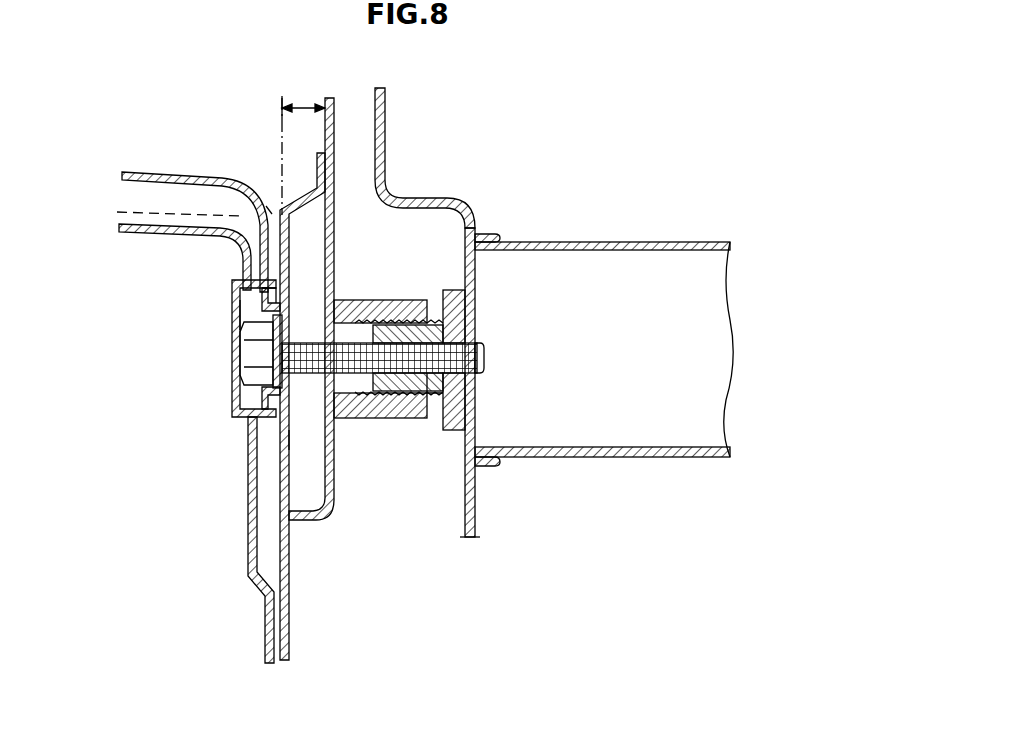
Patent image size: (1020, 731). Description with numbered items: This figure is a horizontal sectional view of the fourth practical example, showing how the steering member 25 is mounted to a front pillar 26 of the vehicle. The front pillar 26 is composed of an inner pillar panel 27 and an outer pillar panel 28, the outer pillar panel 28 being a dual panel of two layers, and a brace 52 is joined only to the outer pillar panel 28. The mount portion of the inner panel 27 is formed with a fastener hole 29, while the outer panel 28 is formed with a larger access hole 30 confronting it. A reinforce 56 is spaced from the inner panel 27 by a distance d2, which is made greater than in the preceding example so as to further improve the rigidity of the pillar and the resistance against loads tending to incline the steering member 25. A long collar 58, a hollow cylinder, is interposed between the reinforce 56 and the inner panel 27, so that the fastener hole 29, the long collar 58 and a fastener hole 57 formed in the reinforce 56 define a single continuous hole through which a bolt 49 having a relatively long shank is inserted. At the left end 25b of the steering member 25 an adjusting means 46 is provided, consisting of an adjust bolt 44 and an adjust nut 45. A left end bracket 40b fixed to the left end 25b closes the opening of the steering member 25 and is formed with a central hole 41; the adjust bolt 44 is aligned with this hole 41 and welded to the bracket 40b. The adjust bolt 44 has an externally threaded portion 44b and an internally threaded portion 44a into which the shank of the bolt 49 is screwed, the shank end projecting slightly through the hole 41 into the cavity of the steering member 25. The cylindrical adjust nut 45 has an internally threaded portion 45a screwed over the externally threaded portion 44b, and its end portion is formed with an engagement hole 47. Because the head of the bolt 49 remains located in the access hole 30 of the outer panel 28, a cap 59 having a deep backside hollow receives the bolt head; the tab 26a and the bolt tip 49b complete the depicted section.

The steering member 25 is at (718, 328).
The left end of steering member 25b is at (537, 458).
The front pillar 26 is at (215, 380).
The bracket tab 26a is at (336, 212).
The inner pillar panel 27 is at (286, 520).
The outer pillar panel 28 is at (250, 520).
The fastener hole 29 is at (288, 440).
The access hole 30 is at (240, 400).
The left end bracket 40b is at (386, 140).
The central hole 41 is at (476, 335).
The adjust bolt 44 is at (447, 292).
The internally threaded portion 44a is at (483, 350).
The externally threaded portion 44b is at (435, 395).
The adjust nut 45 is at (375, 300).
The internally threaded portion 45a is at (412, 388).
The adjusting means 46 is at (399, 376).
The engagement hole 47 is at (357, 395).
The bolt 49 is at (250, 372).
The bolt tip 49b is at (483, 372).
The brace 52 is at (158, 172).
The reinforce 56 is at (270, 208).
The fastener hole 57 is at (240, 316).
The long collar 58 is at (240, 292).
The cap 59 is at (272, 350).
The distance d2 is at (313, 99).